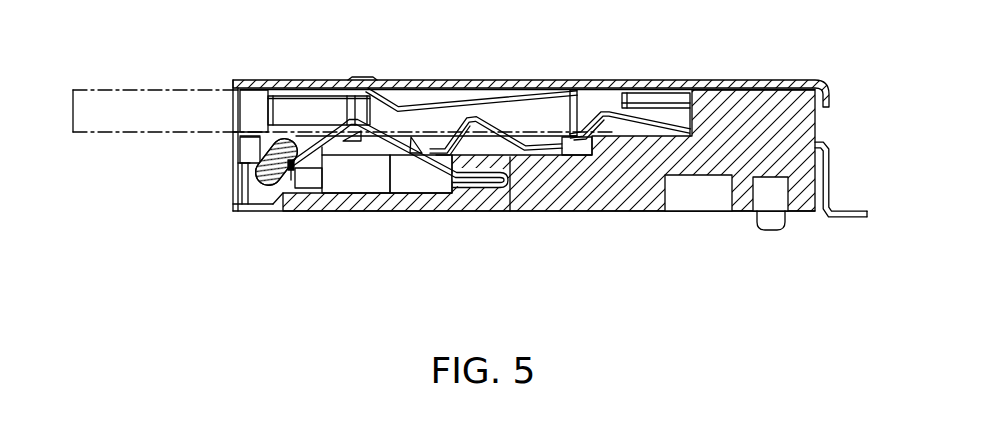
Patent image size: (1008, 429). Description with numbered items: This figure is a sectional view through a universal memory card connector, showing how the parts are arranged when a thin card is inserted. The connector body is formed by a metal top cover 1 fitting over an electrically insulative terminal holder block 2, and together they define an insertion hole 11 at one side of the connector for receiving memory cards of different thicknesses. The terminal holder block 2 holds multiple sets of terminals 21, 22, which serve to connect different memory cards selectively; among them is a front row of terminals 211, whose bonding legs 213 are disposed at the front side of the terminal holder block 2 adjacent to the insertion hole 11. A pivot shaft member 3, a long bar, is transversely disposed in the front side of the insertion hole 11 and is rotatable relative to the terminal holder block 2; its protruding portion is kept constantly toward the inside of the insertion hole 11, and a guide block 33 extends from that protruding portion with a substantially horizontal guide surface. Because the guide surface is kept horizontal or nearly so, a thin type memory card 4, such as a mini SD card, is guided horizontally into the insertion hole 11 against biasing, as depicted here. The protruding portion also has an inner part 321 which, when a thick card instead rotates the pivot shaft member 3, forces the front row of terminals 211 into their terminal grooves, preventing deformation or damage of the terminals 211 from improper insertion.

The top cover 1 is at (656, 80).
The terminal holder block 2 is at (616, 195).
The pivot shaft member 3 is at (255, 160).
The thin type memory card 4 is at (108, 133).
The insertion hole 11 is at (230, 118).
The terminals 21 is at (473, 115).
The terminals 22 is at (600, 112).
The guide block 33 is at (312, 78).
The front row of terminals 211 is at (313, 80).
The bonding legs 213 is at (247, 211).
The inner part 321 is at (290, 170).